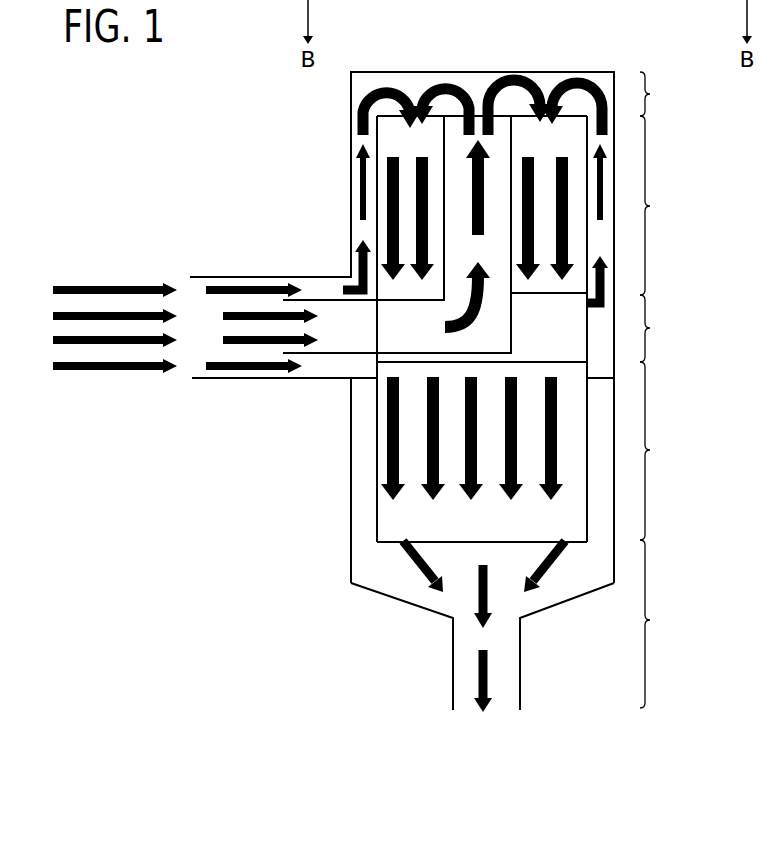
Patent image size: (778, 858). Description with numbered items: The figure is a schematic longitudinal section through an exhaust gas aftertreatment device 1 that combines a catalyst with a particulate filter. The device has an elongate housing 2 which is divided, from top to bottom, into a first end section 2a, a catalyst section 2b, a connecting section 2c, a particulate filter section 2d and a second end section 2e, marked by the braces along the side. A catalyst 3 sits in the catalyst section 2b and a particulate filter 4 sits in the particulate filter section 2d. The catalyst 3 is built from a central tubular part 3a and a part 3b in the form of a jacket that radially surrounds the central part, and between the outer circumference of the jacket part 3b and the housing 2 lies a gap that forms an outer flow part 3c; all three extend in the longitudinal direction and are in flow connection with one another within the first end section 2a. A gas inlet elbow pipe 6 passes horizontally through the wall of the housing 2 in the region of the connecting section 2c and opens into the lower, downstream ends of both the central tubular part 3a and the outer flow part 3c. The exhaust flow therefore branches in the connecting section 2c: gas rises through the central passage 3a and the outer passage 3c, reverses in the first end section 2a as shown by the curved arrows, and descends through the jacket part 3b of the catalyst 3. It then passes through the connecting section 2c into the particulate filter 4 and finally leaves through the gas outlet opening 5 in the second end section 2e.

The exhaust gas aftertreatment device 1 is at (255, 180).
The housing 2 is at (616, 82).
The first end section 2a is at (666, 94).
The catalyst section 2b is at (667, 205).
The connecting section 2c is at (666, 328).
The particulate filter section 2d is at (668, 451).
The second end section 2e is at (668, 624).
The catalyst 3 is at (377, 144).
The central tubular part 3a is at (477, 128).
The jacket-form part of the catalyst 3b is at (395, 128).
The outer flow part 3c is at (360, 229).
The particulate filter 4 is at (387, 517).
The gas outlet opening 5 is at (452, 700).
The gas inlet elbow pipe 6 is at (197, 283).